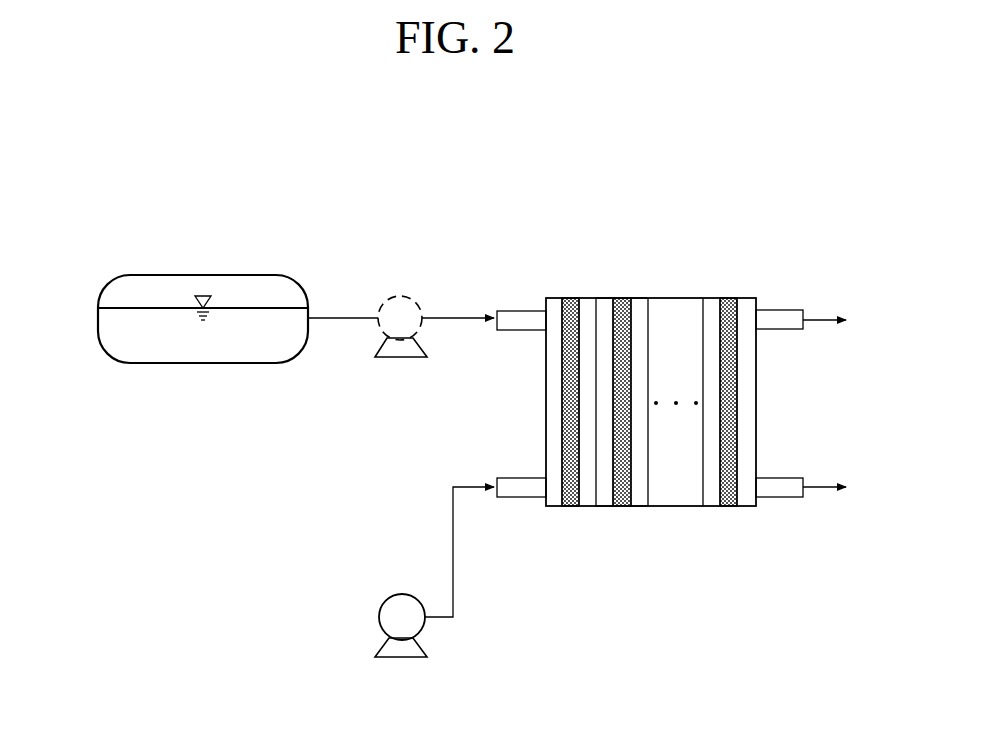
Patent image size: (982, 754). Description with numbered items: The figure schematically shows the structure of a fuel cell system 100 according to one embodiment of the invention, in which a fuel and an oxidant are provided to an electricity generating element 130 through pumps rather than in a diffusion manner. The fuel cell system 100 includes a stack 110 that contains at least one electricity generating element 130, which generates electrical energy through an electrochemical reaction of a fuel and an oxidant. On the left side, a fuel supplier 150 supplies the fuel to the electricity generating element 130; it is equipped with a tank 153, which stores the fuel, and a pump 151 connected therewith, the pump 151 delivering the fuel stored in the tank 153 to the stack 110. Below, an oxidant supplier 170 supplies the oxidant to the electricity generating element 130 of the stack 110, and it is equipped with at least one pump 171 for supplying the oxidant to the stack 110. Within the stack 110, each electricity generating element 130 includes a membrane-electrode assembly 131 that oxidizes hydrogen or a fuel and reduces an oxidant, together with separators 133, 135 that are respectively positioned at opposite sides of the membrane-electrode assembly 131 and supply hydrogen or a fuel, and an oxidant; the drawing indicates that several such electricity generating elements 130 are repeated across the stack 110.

The fuel cell system 100 is at (481, 164).
The stack 110 is at (671, 433).
The electricity generating element 130 is at (632, 464).
The membrane-electrode assembly 131 is at (625, 507).
The separator 133 is at (602, 507).
The separator 135 is at (668, 443).
The fuel supplier 150 is at (100, 275).
The pump 151 is at (392, 297).
The tank 153 is at (224, 275).
The oxidant supplier 170 is at (383, 589).
The pump 171 is at (392, 594).